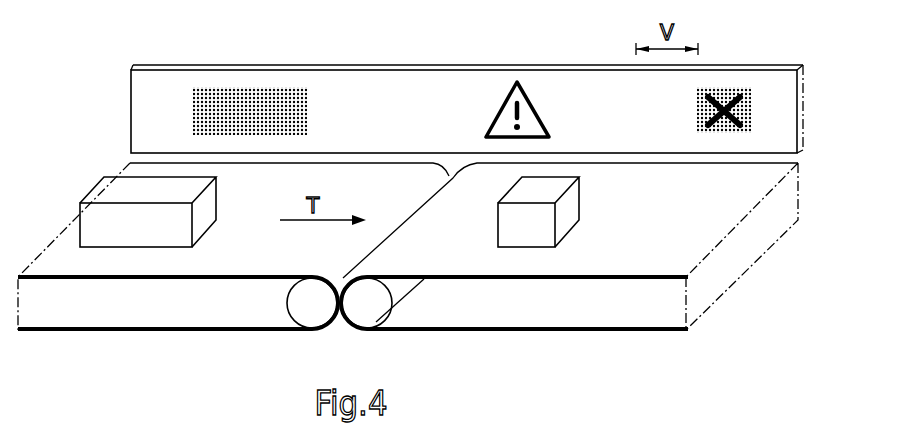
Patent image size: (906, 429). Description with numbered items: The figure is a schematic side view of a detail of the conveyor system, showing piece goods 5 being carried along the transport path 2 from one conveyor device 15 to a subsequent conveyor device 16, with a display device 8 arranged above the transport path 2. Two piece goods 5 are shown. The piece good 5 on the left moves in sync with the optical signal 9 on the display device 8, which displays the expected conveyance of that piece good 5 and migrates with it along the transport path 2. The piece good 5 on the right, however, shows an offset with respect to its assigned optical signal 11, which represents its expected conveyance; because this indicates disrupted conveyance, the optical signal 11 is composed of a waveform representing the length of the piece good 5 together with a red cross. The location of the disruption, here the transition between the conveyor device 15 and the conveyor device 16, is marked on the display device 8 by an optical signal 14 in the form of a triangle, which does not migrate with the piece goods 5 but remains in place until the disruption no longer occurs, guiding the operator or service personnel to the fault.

The display device 8 is at (208, 68).
The optical signal 9 is at (325, 108).
The optical signal 14 is at (479, 108).
The optical signal 11 is at (679, 108).
The piece goods 5 is at (208, 208).
The transport path 2 is at (651, 232).
The conveyor device 15 is at (247, 260).
The conveyor device 16 is at (610, 258).